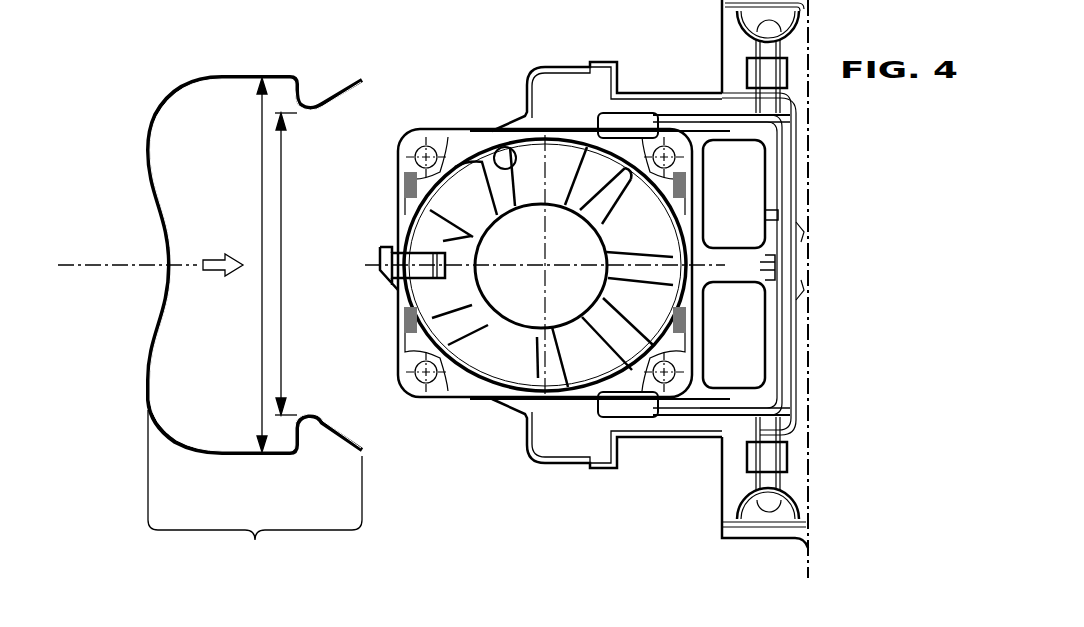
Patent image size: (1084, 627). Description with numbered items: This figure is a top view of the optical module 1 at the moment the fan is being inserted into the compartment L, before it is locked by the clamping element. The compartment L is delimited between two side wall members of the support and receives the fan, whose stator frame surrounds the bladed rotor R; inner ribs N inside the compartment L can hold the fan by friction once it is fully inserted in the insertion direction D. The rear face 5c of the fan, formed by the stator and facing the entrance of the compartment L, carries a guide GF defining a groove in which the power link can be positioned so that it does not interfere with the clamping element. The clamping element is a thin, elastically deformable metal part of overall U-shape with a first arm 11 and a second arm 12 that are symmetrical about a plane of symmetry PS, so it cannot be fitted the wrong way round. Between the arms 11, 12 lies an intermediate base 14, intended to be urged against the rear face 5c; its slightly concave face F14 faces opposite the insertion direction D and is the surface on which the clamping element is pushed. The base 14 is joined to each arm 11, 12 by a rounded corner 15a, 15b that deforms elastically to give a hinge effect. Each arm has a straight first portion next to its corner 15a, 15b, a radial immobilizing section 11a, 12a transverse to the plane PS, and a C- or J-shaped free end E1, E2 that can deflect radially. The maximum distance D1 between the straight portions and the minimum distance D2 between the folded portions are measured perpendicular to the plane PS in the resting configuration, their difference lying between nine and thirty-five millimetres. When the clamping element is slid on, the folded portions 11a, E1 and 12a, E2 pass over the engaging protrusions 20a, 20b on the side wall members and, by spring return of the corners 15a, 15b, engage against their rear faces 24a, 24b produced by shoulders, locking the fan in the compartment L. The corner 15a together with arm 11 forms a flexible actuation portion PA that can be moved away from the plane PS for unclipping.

The optical module 1 is at (118, 134).
The first arm 11 is at (243, 456).
The radial immobilizing section 11a is at (305, 442).
The second arm 12 is at (243, 75).
The radial immobilizing section 12a is at (307, 92).
The intermediate base 14 is at (158, 330).
The concave face F14 is at (166, 296).
The rounded corner 15a is at (152, 412).
The rounded corner 15b is at (166, 96).
The maximum distance D1 is at (243, 265).
The minimum distance D2 is at (298, 264).
The insertion direction D is at (223, 253).
The plane of symmetry PS is at (72, 258).
The flexible actuation portion PA is at (255, 491).
The free end E1 is at (338, 426).
The free end E2 is at (338, 104).
The guide GF is at (380, 250).
The rear face 5c is at (397, 330).
The bladed rotor R is at (500, 345).
The engaging protrusion 20a is at (570, 462).
The engaging protrusion 20b is at (567, 66).
The rear face 24a is at (620, 466).
The rear face 24b is at (620, 62).
The compartment L is at (738, 178).
The inner ribs N is at (770, 218).